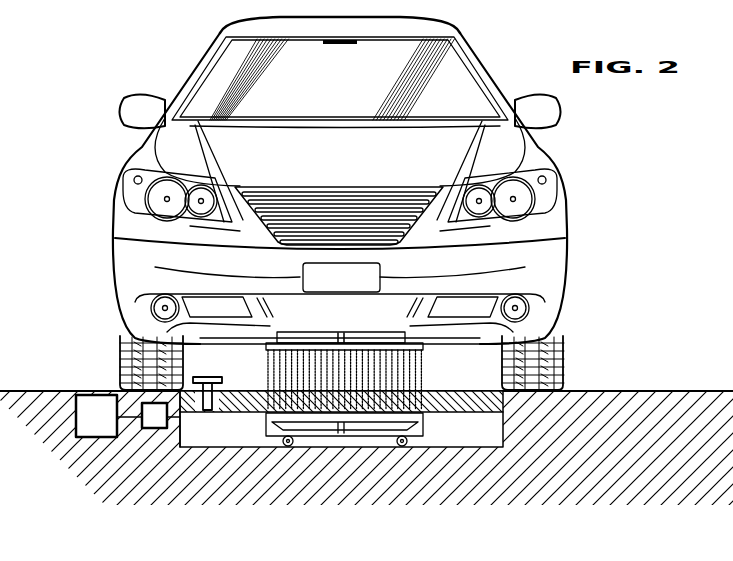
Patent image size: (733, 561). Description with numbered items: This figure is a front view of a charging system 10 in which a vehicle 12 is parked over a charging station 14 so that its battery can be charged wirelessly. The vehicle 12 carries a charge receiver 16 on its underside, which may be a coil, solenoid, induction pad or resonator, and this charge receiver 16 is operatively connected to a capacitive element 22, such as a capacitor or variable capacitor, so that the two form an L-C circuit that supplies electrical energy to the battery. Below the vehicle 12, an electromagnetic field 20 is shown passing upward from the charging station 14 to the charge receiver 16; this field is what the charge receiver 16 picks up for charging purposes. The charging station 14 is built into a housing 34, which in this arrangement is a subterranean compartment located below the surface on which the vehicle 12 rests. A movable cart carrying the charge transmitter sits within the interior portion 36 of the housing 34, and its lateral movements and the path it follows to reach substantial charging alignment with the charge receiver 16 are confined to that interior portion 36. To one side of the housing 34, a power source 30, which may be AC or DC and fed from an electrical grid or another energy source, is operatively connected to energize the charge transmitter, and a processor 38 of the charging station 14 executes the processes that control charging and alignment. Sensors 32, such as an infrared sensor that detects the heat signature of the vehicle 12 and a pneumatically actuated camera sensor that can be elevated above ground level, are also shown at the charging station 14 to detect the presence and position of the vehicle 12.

The charging system 10 is at (75, 230).
The vehicle 12 is at (565, 182).
The charging station 14 is at (656, 486).
The charge receiver 16 is at (425, 347).
The electromagnetic field 20 is at (265, 379).
The capacitive element 22 is at (346, 332).
The power source 30 is at (99, 437).
The sensors 32 is at (208, 411).
The housing 34 is at (503, 432).
The interior portion 36 is at (437, 432).
The processor 38 is at (155, 428).